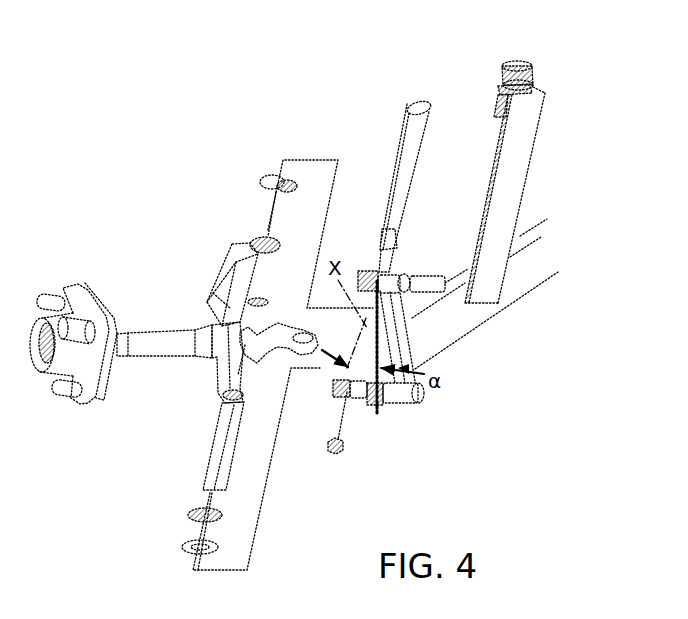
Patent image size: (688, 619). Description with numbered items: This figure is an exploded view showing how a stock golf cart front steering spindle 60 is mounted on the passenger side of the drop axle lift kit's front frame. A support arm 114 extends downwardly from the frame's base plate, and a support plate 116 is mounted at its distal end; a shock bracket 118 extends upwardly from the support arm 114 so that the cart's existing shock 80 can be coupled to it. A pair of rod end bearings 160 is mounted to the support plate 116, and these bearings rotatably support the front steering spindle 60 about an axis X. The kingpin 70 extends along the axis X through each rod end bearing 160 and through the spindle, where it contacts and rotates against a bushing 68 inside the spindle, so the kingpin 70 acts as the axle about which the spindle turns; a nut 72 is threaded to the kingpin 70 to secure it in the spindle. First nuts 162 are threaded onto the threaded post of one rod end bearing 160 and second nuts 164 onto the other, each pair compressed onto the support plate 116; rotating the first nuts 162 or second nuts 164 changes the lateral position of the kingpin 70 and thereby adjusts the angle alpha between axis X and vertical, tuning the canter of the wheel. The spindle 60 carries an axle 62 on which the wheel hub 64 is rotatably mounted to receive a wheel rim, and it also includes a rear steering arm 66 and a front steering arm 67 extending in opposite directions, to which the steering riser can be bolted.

The front steering spindle 60 is at (228, 368).
The axle 62 is at (145, 343).
The wheel hub 64 is at (80, 297).
The rear steering arm 66 is at (228, 265).
The front steering arm 67 is at (292, 337).
The bushing 68 is at (212, 467).
The kingpin 70 is at (407, 146).
The nut 72 is at (333, 452).
The shock 80 is at (520, 62).
The support arm 114 is at (448, 325).
The support plate 116 is at (397, 333).
The shock bracket 118 is at (510, 178).
The rod end bearing 160 is at (373, 288).
The first nut 162 is at (388, 403).
The second nut 164 is at (427, 272).